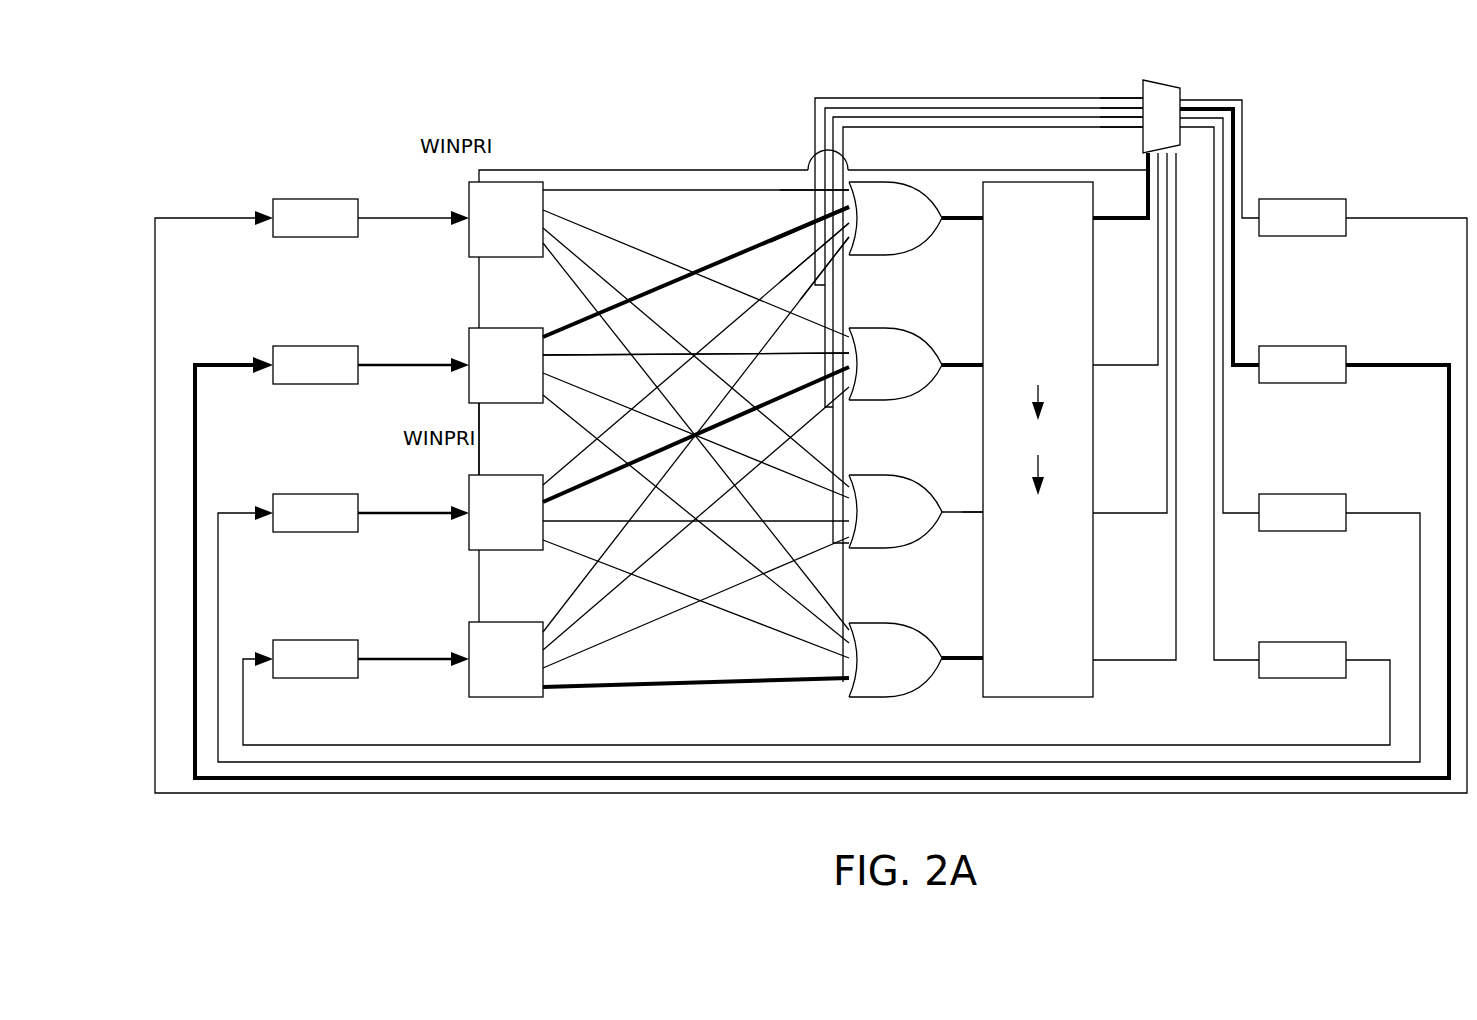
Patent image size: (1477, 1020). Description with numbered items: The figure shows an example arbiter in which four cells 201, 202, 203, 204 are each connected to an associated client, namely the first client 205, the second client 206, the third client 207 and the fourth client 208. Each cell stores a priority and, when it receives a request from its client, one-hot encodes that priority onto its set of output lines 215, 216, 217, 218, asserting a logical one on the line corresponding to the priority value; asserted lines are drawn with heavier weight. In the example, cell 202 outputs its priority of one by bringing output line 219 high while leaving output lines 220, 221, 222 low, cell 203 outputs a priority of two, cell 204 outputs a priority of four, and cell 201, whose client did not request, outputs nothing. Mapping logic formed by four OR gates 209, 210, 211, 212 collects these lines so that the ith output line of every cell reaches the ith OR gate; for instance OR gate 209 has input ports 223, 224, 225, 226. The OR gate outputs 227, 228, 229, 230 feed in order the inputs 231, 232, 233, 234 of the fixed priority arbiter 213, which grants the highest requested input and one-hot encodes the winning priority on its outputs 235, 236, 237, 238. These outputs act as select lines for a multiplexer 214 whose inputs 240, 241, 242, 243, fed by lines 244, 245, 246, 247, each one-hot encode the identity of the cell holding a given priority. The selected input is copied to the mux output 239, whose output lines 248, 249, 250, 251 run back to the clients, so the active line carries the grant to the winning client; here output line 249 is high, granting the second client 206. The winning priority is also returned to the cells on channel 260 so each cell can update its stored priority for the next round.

The cell 201 is at (506, 219).
The cell 202 is at (506, 365).
The cell 203 is at (506, 512).
The cell 204 is at (506, 659).
The client 1 205 is at (272, 216).
The client 2 206 is at (272, 345).
The client 3 207 is at (283, 493).
The client 4 208 is at (323, 640).
The OR gate 209 is at (897, 253).
The OR gate 210 is at (895, 364).
The OR gate 211 is at (895, 511).
The OR gate 212 is at (895, 660).
The fixed priority arbiter 213 is at (1038, 439).
The multiplexer 214 is at (1162, 83).
The output lines 215 is at (605, 209).
The output lines 216 is at (565, 310).
The output lines 217 is at (582, 505).
The output lines 218 is at (563, 669).
The output line 219 is at (555, 326).
The output line 220 is at (558, 352).
The output line 221 is at (556, 376).
The output line 222 is at (556, 399).
The input port 223 is at (856, 200).
The input port 224 is at (866, 214).
The input port 225 is at (852, 224).
The input port 226 is at (857, 237).
The output 227 is at (940, 221).
The output 228 is at (944, 365).
The output 229 is at (944, 512).
The output 230 is at (944, 658).
The input 231 is at (988, 217).
The input 232 is at (984, 366).
The input 233 is at (984, 513).
The input 234 is at (984, 660).
The output 235 is at (1092, 218).
The output 236 is at (1093, 367).
The output 237 is at (1093, 514).
The output 238 is at (1093, 661).
The output 239 is at (1218, 85).
The input 240 is at (1143, 98).
The input 241 is at (1143, 108).
The input 242 is at (1143, 117).
The input 243 is at (1143, 127).
The input line 244 is at (940, 98).
The input line 245 is at (943, 108).
The input line 246 is at (943, 117).
The input line 247 is at (943, 127).
The output line 248 is at (182, 222).
The output line 249 is at (197, 430).
The output line 250 is at (218, 585).
The output line 251 is at (243, 743).
The channel 260 is at (700, 170).